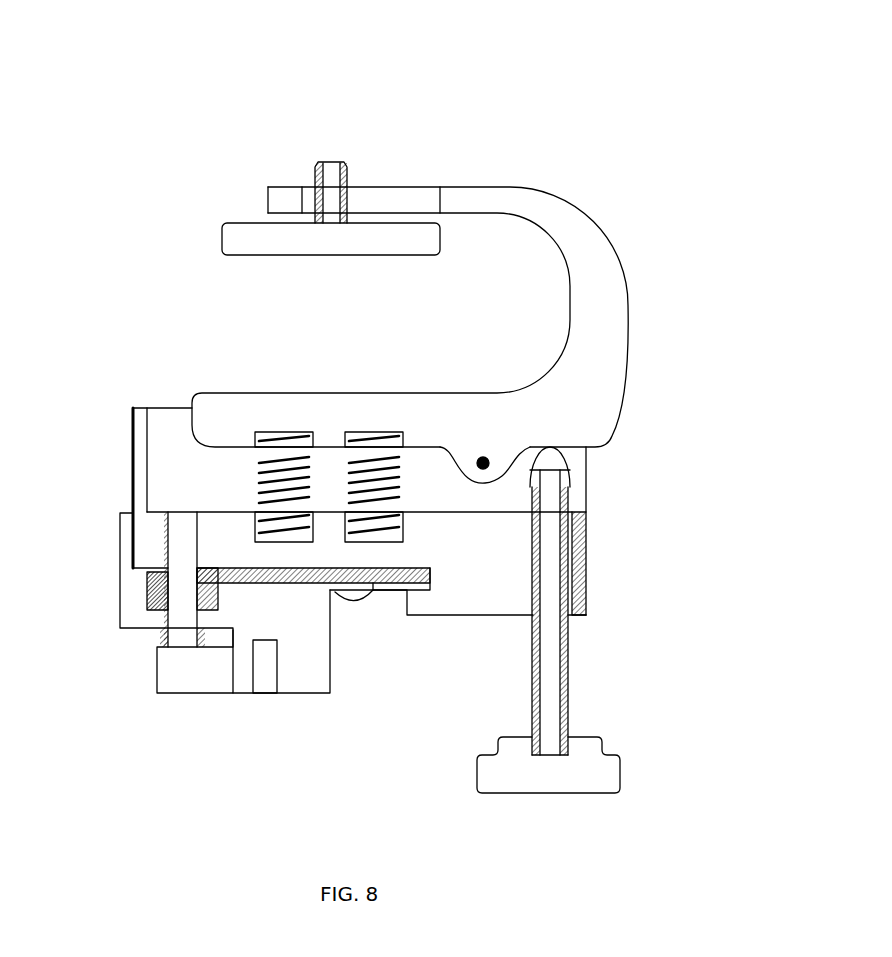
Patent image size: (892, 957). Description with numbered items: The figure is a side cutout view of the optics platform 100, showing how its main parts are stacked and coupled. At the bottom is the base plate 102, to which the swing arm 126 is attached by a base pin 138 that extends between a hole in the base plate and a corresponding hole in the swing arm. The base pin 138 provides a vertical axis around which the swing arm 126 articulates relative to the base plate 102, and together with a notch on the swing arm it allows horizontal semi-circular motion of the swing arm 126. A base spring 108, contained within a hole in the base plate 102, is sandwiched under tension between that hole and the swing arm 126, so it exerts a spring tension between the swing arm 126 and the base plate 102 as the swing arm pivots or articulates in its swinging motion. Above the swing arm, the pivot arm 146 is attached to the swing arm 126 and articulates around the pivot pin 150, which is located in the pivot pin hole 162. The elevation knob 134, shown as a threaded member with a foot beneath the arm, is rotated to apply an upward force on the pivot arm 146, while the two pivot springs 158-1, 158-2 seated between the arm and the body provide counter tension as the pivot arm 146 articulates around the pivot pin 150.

The optics platform 100 is at (170, 100).
The pivot arm 146 is at (510, 187).
The pivot pin hole 162 is at (488, 457).
The pivot pin 150 is at (488, 466).
The base pin 138 is at (168, 533).
The base plate 102 is at (120, 565).
The base spring 108 is at (146, 590).
The swing arm 126 is at (587, 570).
The elevation knob 134 is at (553, 794).
The pivot spring 158-1 is at (298, 542).
The pivot spring 158-2 is at (385, 542).